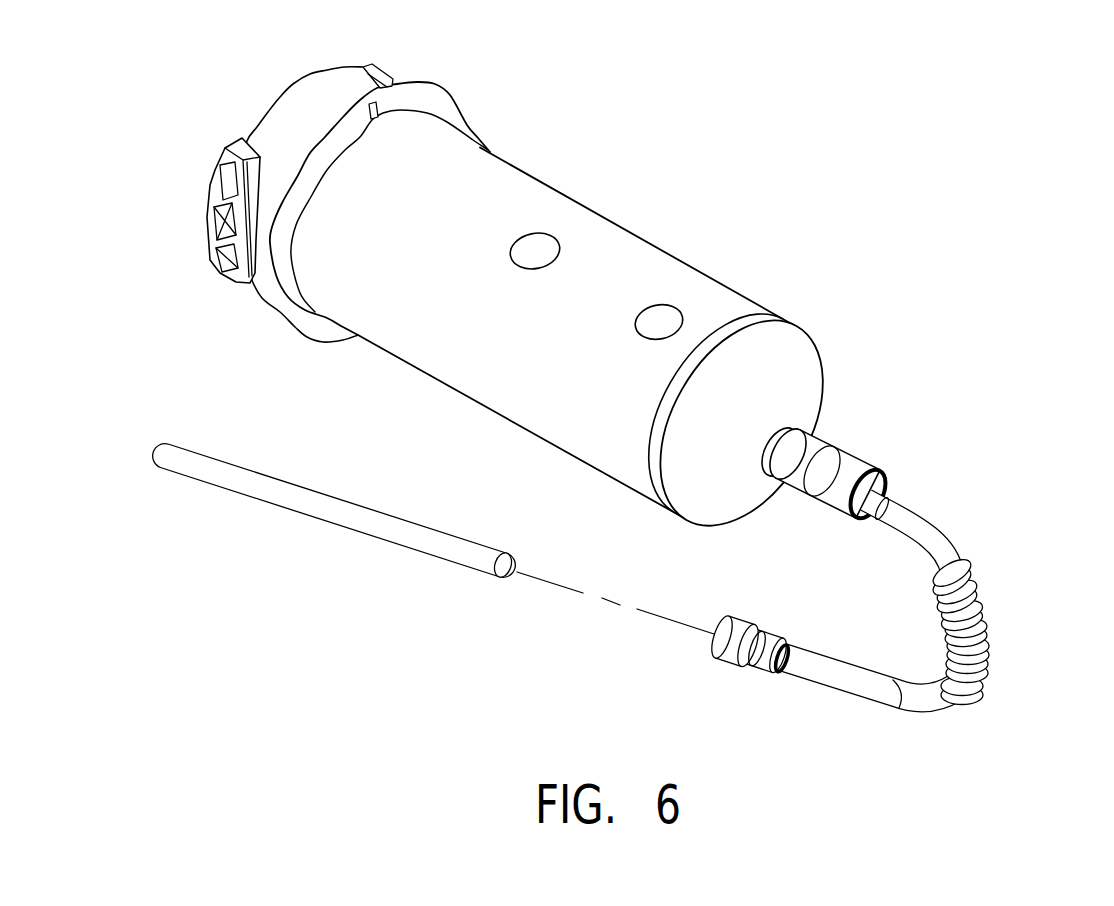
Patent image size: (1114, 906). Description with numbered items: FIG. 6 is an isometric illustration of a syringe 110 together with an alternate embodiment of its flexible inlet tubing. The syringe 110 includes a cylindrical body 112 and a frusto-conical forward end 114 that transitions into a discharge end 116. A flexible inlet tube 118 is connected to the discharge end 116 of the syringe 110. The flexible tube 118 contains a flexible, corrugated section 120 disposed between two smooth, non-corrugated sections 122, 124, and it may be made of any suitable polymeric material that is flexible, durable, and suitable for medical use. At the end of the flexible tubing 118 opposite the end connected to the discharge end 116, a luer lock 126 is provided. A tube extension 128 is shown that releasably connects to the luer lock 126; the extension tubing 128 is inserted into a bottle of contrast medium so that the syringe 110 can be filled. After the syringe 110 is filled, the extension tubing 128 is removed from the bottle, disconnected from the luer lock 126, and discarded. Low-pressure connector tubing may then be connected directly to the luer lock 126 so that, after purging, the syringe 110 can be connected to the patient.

The syringe 110 is at (623, 418).
The cylindrical body 112 is at (530, 188).
The frusto-conical forward end 114 is at (753, 400).
The discharge end 116 is at (840, 470).
The flexible inlet tube 118 is at (904, 582).
The flexible (corrugated) section 120 is at (950, 652).
The smooth (non-corrugated) section 122 is at (917, 535).
The smooth (non-corrugated) section 124 is at (810, 665).
The luer lock 126 is at (723, 623).
The tube extension 128 is at (380, 525).